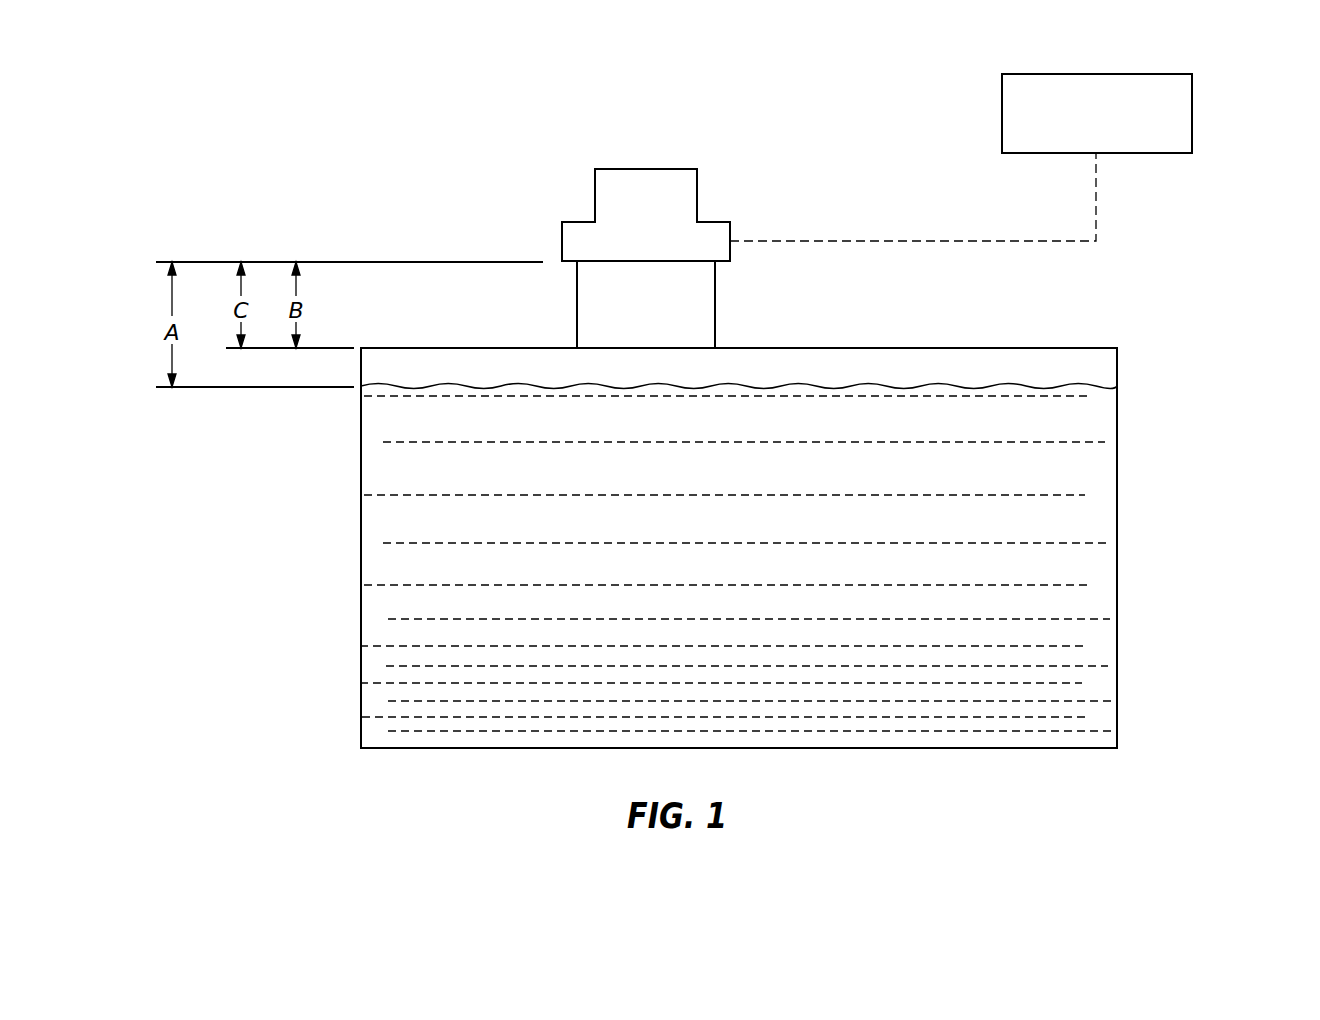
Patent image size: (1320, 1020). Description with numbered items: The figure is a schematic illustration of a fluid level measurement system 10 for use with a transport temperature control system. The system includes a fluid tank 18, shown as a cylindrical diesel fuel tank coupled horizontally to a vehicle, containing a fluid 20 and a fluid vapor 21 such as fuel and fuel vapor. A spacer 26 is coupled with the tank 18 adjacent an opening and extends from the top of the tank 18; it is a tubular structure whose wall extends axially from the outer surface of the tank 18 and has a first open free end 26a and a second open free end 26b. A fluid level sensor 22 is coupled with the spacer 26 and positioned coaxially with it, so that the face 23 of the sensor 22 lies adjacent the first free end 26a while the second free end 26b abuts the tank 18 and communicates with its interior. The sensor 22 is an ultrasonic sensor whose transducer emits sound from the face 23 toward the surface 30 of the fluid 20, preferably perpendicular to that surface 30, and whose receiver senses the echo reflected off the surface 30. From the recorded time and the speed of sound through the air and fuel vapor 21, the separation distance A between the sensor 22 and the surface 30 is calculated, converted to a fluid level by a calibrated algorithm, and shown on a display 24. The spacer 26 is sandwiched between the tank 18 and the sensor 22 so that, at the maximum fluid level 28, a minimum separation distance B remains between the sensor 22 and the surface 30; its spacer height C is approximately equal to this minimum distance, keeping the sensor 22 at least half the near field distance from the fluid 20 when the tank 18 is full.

The fluid level measurement system 10 is at (466, 118).
The fluid tank 18 is at (1117, 467).
The fluid 20 is at (423, 570).
The fluid vapor 21 is at (923, 367).
The fluid level sensor 22 is at (663, 168).
The face 23 is at (636, 270).
The display 24 is at (1192, 109).
The spacer 26 is at (717, 302).
The first open free end 26a is at (722, 268).
The second open free end 26b is at (722, 342).
The maximum fluid level 28 is at (636, 341).
The surface 30 is at (1028, 375).